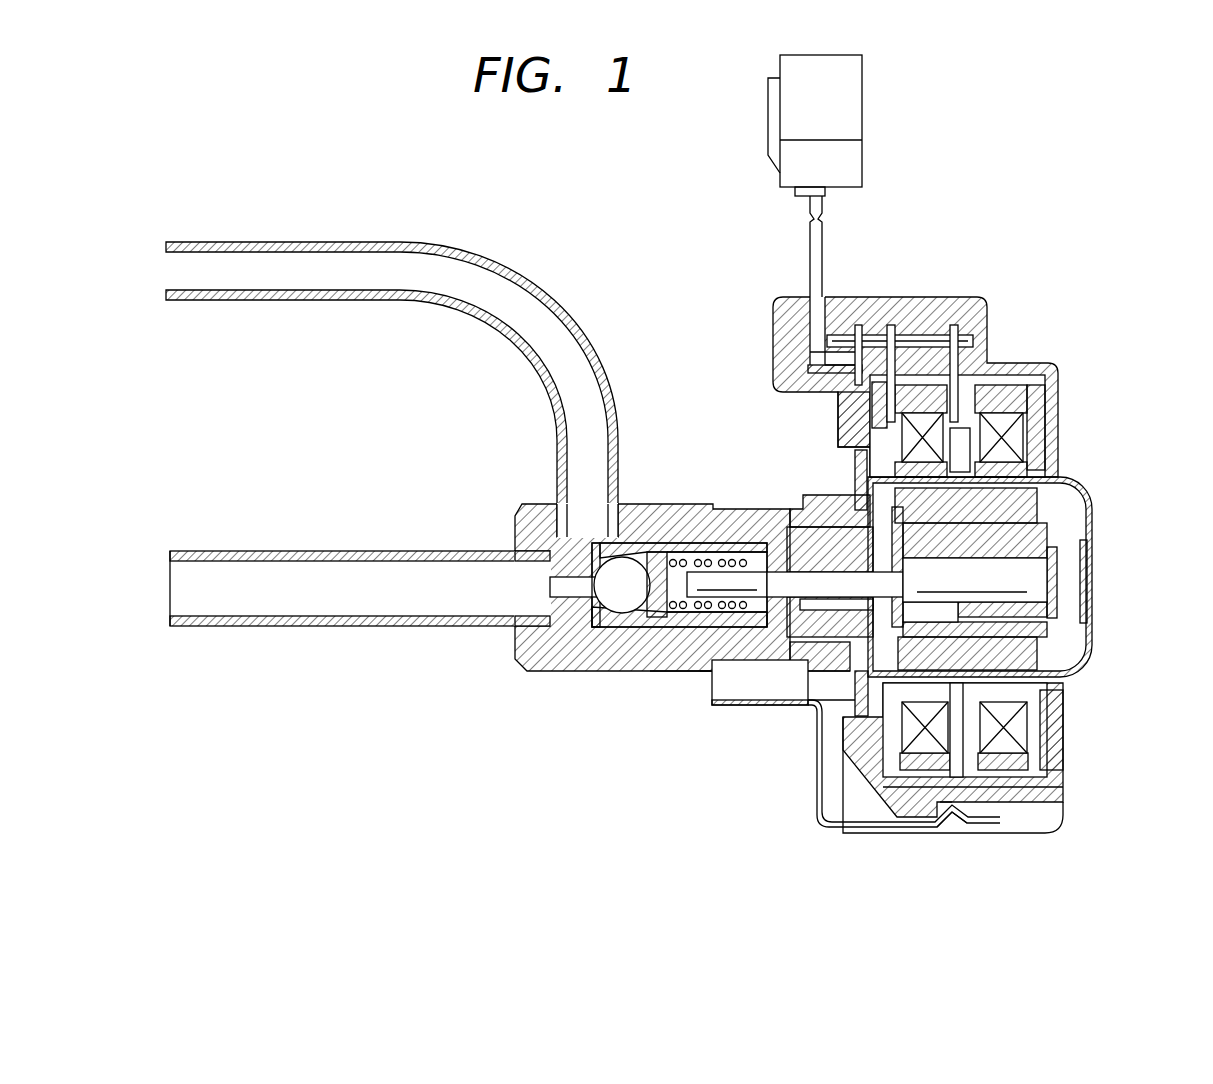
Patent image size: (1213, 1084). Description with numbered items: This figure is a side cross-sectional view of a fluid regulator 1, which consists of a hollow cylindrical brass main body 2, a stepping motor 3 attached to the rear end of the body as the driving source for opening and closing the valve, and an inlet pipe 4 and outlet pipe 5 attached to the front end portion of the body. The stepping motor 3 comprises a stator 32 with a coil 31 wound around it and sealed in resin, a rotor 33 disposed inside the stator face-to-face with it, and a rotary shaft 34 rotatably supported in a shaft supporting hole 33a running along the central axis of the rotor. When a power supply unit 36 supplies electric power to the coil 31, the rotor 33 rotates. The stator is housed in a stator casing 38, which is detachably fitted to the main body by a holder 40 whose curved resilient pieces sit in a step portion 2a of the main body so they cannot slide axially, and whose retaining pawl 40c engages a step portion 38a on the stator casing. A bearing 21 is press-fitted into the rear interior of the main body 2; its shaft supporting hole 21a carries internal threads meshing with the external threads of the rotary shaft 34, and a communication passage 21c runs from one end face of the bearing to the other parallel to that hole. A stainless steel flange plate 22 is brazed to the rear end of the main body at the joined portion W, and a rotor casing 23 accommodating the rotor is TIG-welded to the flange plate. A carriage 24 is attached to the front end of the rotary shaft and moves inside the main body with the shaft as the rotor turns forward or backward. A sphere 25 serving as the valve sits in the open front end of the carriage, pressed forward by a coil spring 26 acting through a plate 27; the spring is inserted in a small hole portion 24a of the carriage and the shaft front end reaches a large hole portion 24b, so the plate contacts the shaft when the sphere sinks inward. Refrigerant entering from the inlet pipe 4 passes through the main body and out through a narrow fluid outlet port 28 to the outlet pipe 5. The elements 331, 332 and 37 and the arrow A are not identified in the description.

The fluid regulator 1 is at (632, 812).
The main body 2 is at (665, 672).
The step portion 2a is at (740, 665).
The stepping motor 3 is at (1052, 350).
The inlet pipe 4 is at (245, 243).
The outlet pipe 5 is at (272, 622).
The bearing 21 is at (835, 520).
The shaft supporting hole 21a is at (760, 566).
The communication passage 21c is at (835, 560).
The flange plate 22 is at (858, 735).
The rotor casing 23 is at (1085, 620).
The carriage 24 is at (675, 545).
The small hole portion 24a is at (700, 555).
The large hole portion 24b is at (618, 660).
The sphere 25 is at (585, 645).
The coil spring 26 is at (700, 672).
The plate 27 is at (645, 650).
The fluid outlet port 28 is at (550, 580).
The coil 31 is at (1000, 400).
The stator 32 is at (1015, 440).
The rotor 33 is at (1027, 507).
The shaft supporting hole 33a is at (1010, 597).
The rotor end 331 is at (1030, 550).
The bearing 332 is at (1085, 530).
The rotary shaft 34 is at (720, 565).
The power supply unit 36 is at (850, 93).
The bracket 37 is at (815, 708).
The stator casing 38 is at (1065, 760).
The step portion 38a is at (955, 812).
The holder 40 is at (820, 800).
The retaining pawl 40c is at (970, 820).
The joined portion W is at (840, 745).
The flow direction A is at (145, 513).